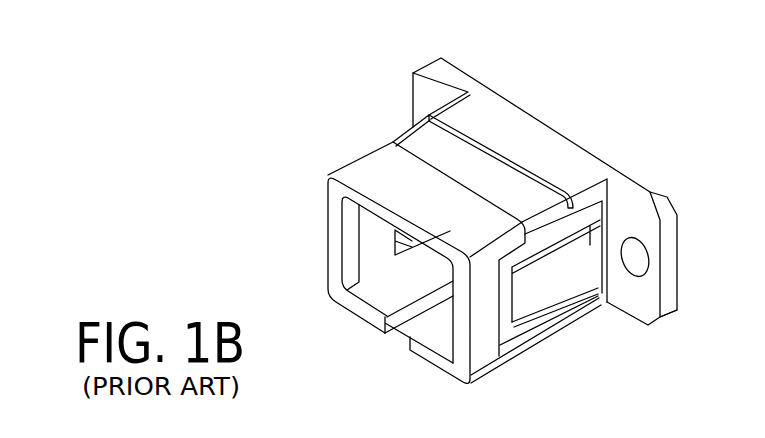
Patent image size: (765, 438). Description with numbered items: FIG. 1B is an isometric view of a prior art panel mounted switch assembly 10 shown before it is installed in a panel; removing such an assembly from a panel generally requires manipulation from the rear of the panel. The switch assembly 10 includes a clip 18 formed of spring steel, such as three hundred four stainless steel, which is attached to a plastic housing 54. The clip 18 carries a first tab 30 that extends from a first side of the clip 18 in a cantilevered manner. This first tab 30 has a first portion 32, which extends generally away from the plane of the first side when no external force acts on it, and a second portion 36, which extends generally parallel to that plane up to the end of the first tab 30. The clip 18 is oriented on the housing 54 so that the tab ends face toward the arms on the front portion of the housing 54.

The switch assembly 10 is at (588, 123).
The clip 18 is at (505, 200).
The first tab 30 is at (548, 293).
The first portion 32 is at (523, 299).
The second portion 36 is at (607, 303).
The plastic housing 54 is at (355, 161).